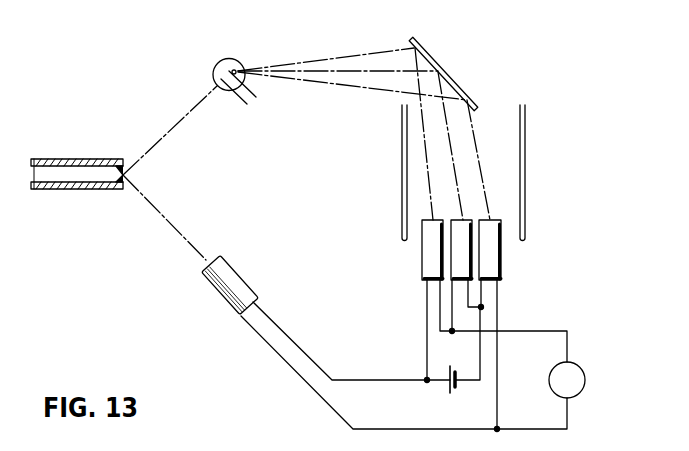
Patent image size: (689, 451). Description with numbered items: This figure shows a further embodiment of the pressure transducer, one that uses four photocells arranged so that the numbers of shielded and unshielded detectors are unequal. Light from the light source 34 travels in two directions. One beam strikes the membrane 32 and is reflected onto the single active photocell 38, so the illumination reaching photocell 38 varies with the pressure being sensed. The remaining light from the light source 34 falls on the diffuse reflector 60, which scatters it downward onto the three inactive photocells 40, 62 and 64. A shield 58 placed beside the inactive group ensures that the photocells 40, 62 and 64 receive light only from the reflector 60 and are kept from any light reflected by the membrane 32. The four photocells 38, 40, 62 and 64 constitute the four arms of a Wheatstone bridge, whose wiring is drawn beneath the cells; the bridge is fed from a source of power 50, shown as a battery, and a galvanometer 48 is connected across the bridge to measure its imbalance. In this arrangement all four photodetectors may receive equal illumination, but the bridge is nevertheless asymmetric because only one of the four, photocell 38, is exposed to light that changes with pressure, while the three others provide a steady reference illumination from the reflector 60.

The membrane 32 is at (119, 160).
The light source 34 is at (229, 58).
The photocell 38 is at (220, 297).
The photocell 40 is at (421, 262).
The galvanometer 48 is at (585, 384).
The source of power 50 is at (452, 394).
The shield 58 is at (402, 148).
The diffuse reflector 60 is at (432, 55).
The photocell 62 is at (465, 219).
The photocell 64 is at (503, 262).